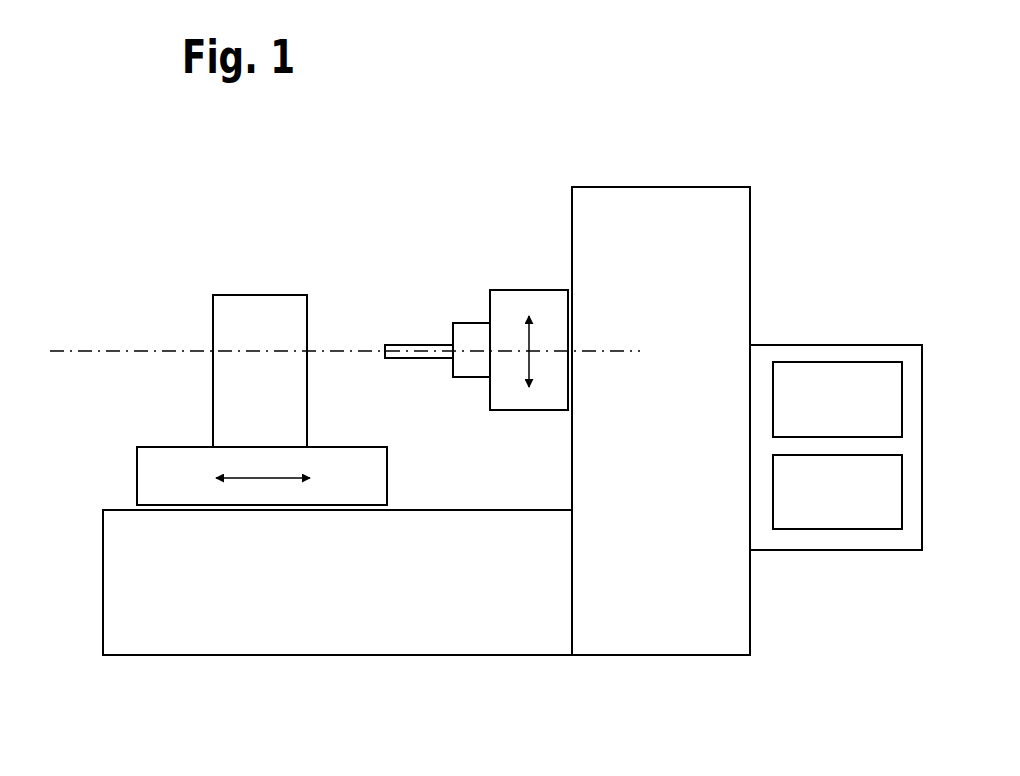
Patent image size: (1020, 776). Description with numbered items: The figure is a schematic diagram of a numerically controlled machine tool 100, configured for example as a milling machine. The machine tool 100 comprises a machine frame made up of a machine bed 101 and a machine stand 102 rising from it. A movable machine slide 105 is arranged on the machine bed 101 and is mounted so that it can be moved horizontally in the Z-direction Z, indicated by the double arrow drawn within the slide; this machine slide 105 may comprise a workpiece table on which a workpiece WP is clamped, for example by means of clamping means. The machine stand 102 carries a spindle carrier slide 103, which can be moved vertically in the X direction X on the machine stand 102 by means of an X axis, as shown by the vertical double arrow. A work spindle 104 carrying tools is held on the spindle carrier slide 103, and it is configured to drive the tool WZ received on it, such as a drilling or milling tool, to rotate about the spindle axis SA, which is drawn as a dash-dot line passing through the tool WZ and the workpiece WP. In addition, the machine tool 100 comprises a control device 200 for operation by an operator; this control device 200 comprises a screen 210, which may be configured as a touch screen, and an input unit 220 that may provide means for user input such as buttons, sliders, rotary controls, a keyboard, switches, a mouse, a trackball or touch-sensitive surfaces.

The machine tool 100 is at (672, 163).
The machine bed 101 is at (338, 655).
The machine stand 102 is at (750, 230).
The spindle carrier slide 103 is at (523, 290).
The work spindle 104 is at (467, 323).
The machine slide 105 is at (137, 477).
The control device 200 is at (855, 550).
The screen 210 is at (837, 399).
The input unit 220 is at (837, 492).
The spindle axis SA is at (80, 350).
The workpiece WP is at (213, 313).
The tool WZ is at (403, 345).
The X direction X is at (537, 367).
The Z-direction Z is at (265, 480).